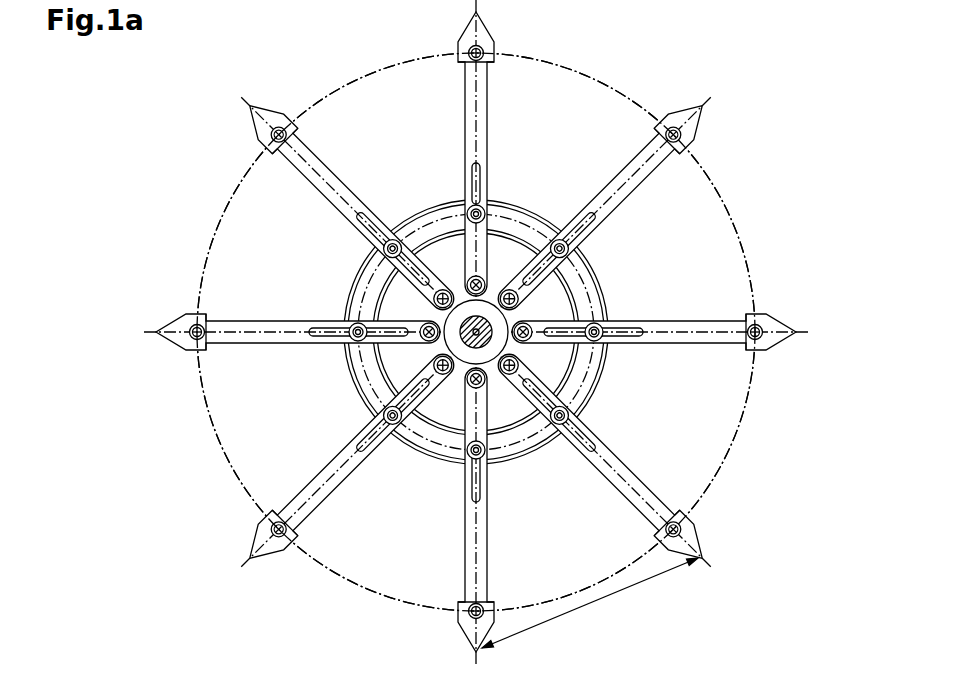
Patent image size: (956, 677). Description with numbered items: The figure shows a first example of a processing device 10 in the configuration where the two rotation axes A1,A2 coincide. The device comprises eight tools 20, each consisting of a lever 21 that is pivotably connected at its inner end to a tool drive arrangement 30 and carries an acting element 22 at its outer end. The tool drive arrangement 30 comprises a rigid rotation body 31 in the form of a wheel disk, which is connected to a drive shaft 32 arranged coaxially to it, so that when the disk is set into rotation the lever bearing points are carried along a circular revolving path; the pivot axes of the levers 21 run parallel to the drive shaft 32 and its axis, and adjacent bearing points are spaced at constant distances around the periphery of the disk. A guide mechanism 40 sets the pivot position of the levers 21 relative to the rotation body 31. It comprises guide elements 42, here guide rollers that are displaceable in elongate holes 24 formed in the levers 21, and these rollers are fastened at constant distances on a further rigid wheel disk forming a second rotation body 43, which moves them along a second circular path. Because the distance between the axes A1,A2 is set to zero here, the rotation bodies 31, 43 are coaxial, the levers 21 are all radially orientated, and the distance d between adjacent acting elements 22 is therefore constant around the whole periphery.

The processing device 10 is at (190, 150).
The tool 20 is at (522, 166).
The lever 21 is at (470, 94).
The acting element 22 is at (482, 33).
The elongate hole 24 is at (476, 193).
The tool drive arrangement 30 is at (523, 353).
The rotation body 31 is at (523, 313).
The drive shaft 32 is at (450, 323).
The guide mechanism 40 is at (433, 465).
The guide element 42 is at (352, 343).
The rotation body (further wheel disk) 43 is at (595, 363).
The axes A1,A2 is at (484, 345).
The distance between acting elements d is at (585, 605).